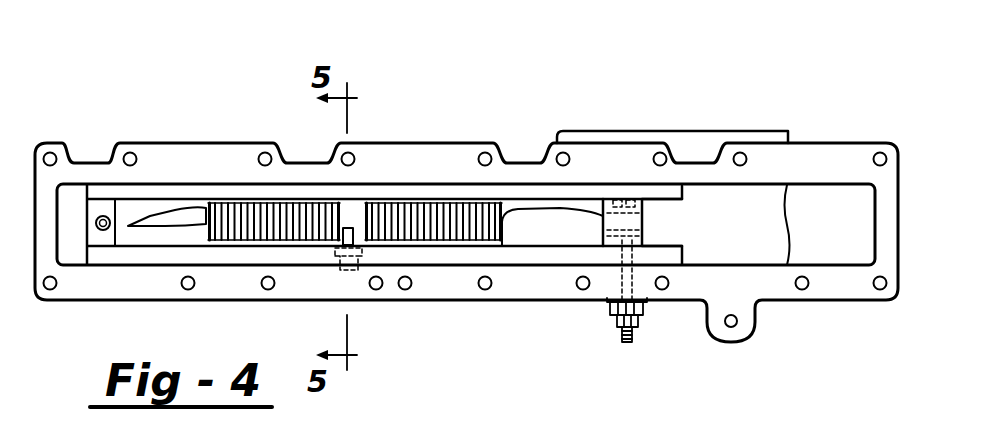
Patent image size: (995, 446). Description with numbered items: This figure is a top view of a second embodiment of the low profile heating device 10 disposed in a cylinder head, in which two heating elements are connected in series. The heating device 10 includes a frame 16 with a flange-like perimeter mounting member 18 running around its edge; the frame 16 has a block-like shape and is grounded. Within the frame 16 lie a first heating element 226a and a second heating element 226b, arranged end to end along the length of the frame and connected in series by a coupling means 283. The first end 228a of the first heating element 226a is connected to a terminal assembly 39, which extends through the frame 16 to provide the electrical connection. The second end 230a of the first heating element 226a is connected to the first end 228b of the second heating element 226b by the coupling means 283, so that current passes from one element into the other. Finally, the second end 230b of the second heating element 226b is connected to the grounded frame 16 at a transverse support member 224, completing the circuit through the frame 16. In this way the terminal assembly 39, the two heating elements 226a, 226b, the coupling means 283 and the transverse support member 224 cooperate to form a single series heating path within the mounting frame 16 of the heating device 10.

The heating device 10 is at (824, 98).
The frame 16 is at (811, 312).
The perimeter mounting member 18 is at (835, 157).
The transverse support member 224 is at (653, 198).
The first heating element 226a is at (418, 213).
The second heating element 226b is at (245, 210).
The first end of first heating element 228a is at (596, 213).
The first end of second heating element 228b is at (337, 250).
The second end of first heating element 230a is at (358, 248).
The second end of second heating element 230b is at (132, 222).
The coupling means 283 is at (355, 281).
The terminal assembly 39 is at (631, 354).